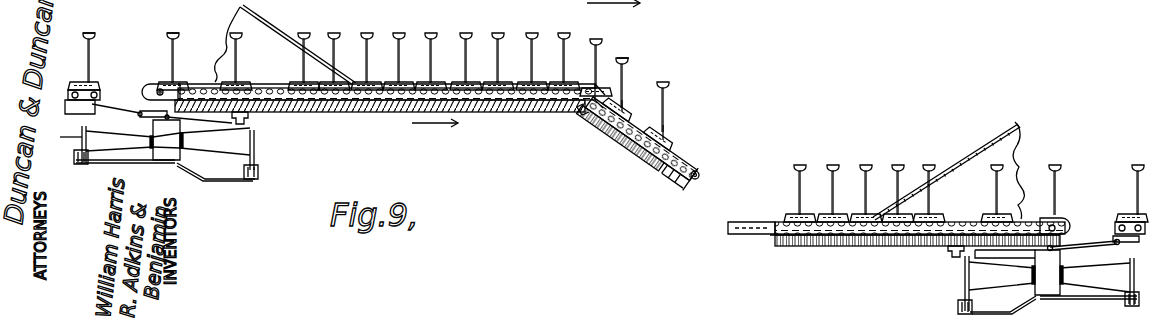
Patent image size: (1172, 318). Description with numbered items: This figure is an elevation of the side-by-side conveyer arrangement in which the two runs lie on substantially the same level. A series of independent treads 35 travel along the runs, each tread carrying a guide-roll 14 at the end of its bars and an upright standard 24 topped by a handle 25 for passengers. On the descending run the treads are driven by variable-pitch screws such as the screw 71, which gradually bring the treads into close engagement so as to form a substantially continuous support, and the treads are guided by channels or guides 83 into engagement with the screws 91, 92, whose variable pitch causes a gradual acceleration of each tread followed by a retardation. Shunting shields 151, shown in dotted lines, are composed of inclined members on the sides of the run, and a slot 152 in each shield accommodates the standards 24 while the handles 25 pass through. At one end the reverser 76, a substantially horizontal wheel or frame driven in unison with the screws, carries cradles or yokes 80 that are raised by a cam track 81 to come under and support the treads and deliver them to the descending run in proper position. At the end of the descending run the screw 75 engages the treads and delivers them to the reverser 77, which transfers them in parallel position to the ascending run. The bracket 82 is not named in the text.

The guide-roll 14 is at (1115, 230).
The standard 24 is at (176, 60).
The handle 25 is at (214, 10).
The tread 35 is at (708, 110).
The screw 71 is at (508, 63).
The screw 75 is at (853, 258).
The reverser 76 is at (147, 141).
The reverser 77 is at (1087, 278).
The cradle 80 is at (100, 100).
The cam track 81 is at (228, 183).
The bracket arm 82 is at (1027, 305).
The guide 83 is at (741, 250).
The screw 91 is at (690, 160).
The screw 92 is at (703, 172).
The shunting shield 151 is at (344, 12).
The slot 152 is at (945, 172).